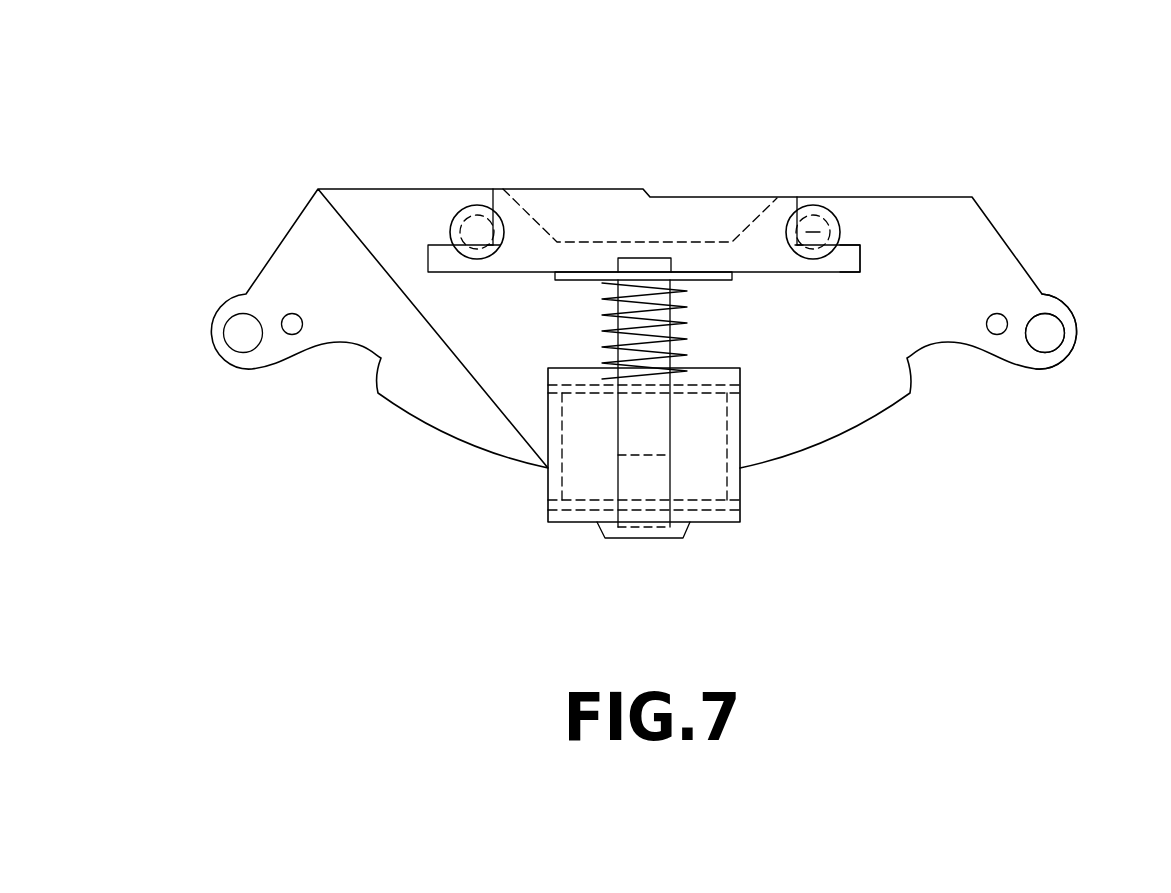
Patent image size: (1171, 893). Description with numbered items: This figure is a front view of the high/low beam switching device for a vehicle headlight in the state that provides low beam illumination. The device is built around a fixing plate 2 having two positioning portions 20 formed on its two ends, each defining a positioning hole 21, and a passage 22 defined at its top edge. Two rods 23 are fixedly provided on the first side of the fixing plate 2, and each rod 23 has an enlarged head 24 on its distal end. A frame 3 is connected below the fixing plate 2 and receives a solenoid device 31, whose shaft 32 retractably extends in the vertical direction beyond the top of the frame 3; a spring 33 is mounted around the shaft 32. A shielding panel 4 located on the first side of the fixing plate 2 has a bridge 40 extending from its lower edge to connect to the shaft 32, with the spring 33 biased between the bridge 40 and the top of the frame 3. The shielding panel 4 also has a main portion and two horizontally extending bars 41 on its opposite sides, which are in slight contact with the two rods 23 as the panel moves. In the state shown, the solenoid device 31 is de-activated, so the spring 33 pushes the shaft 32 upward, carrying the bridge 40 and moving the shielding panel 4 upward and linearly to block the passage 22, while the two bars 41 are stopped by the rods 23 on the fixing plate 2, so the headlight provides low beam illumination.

The fixing plate 2 is at (392, 189).
The positioning portion 20 is at (1083, 325).
The positioning hole 21 is at (1047, 332).
The passage 22 is at (592, 218).
The rod 23 is at (813, 232).
The enlarged head 24 is at (830, 213).
The frame 3 is at (574, 452).
The solenoid device 31 is at (582, 475).
The shaft 32 is at (643, 440).
The spring 33 is at (610, 322).
The shielding panel 4 is at (710, 197).
The bridge 40 is at (727, 280).
The bar 41 is at (843, 263).